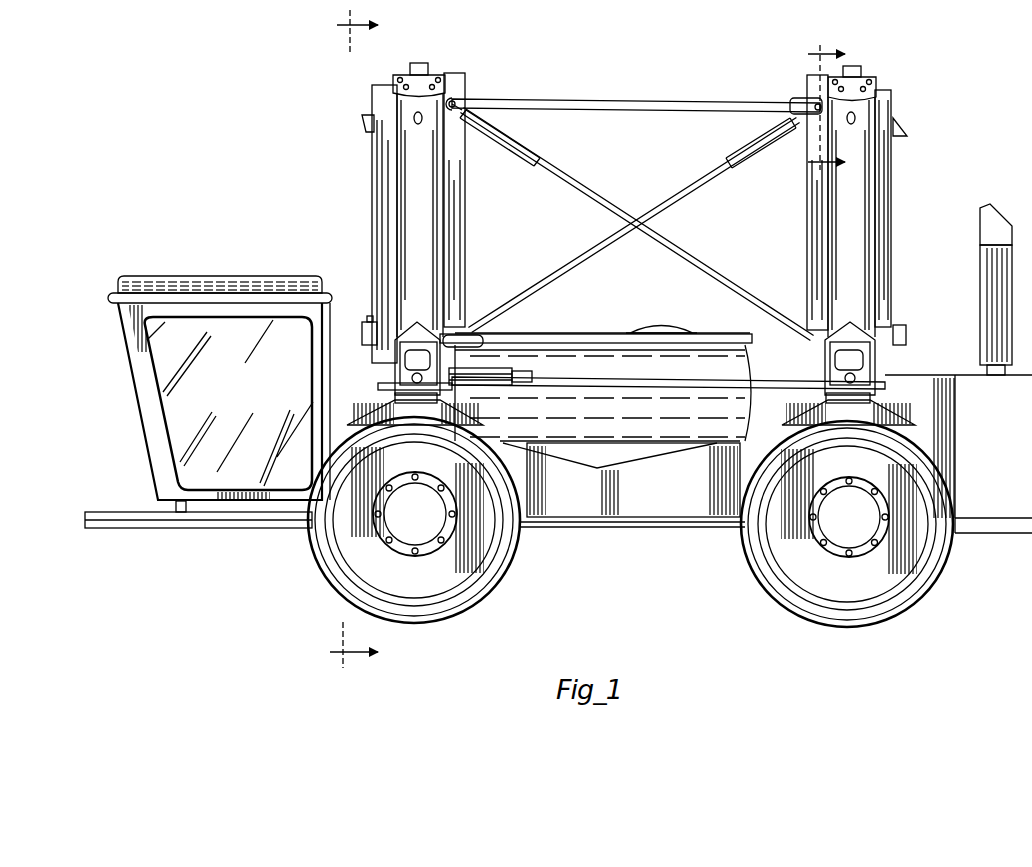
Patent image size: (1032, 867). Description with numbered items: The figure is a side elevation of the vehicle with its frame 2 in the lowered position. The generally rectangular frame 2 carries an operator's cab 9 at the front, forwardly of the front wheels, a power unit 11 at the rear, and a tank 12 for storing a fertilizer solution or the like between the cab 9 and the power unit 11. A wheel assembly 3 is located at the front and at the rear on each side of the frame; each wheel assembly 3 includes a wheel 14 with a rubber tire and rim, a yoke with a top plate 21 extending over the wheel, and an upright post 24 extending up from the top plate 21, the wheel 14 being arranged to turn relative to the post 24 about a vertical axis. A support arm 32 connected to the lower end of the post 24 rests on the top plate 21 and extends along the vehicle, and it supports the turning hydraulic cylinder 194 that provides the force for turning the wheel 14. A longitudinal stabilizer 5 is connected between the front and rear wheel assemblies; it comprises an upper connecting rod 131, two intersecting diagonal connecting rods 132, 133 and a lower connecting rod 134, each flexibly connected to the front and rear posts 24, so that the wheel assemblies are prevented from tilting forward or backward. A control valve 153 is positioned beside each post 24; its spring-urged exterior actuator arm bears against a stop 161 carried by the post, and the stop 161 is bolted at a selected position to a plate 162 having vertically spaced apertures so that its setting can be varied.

The frame 2 is at (158, 548).
The wheel assembly 3 is at (385, 381).
The longitudinal stabilizer 5 is at (632, 211).
The operator's cab 9 is at (236, 403).
The power unit 11 is at (1004, 452).
The tank 12 is at (604, 434).
The wheel 14 is at (322, 562).
The top plate 21 is at (378, 386).
The upright post 24 is at (458, 224).
The support arm 32 is at (488, 390).
The upper connecting rod 131 is at (622, 86).
The diagonal connecting rod 132 is at (566, 174).
The diagonal connecting rod 133 is at (718, 164).
The lower connecting rod 134 is at (606, 344).
The control valve 153 is at (362, 330).
The stop 161 is at (362, 122).
The plate 162 is at (372, 220).
The turning hydraulic cylinder 194 is at (496, 388).